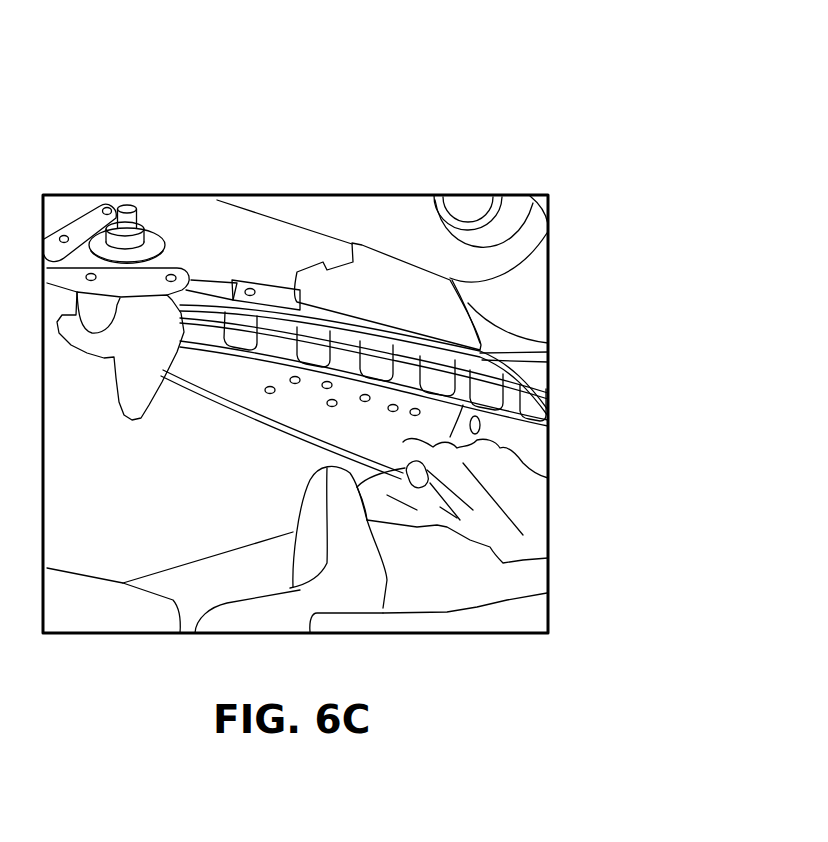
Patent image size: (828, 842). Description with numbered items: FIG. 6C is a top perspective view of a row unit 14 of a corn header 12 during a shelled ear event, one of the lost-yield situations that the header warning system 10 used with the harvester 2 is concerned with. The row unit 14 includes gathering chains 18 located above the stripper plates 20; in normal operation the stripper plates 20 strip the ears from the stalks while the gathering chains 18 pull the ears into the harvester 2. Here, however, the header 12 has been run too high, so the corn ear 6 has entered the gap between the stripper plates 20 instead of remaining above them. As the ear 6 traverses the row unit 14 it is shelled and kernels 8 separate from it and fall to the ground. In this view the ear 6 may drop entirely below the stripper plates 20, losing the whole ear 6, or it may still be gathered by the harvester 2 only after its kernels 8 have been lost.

The harvester 2 is at (469, 147).
The corn ear 6 is at (527, 528).
The kernels 8 is at (327, 389).
The header warning system 10 is at (350, 66).
The header 12 is at (389, 91).
The row unit 14 is at (429, 112).
The gathering chains 18 is at (153, 318).
The stripper plates 20 is at (483, 353).